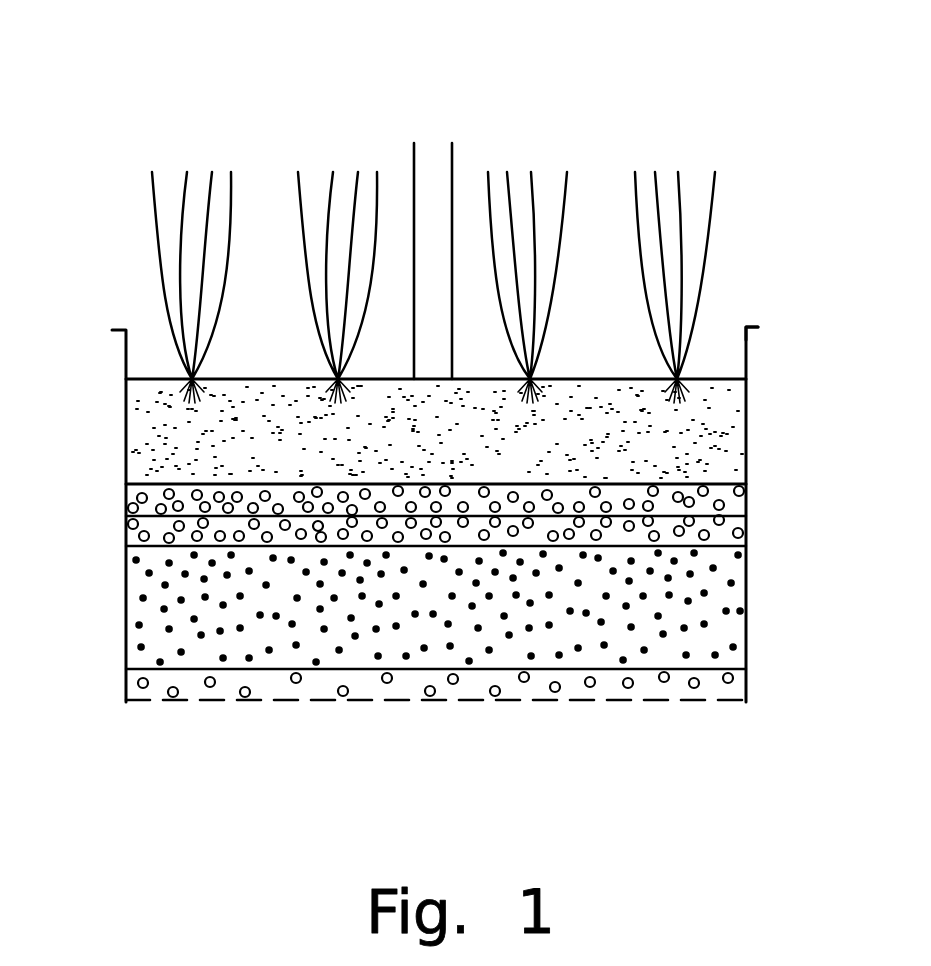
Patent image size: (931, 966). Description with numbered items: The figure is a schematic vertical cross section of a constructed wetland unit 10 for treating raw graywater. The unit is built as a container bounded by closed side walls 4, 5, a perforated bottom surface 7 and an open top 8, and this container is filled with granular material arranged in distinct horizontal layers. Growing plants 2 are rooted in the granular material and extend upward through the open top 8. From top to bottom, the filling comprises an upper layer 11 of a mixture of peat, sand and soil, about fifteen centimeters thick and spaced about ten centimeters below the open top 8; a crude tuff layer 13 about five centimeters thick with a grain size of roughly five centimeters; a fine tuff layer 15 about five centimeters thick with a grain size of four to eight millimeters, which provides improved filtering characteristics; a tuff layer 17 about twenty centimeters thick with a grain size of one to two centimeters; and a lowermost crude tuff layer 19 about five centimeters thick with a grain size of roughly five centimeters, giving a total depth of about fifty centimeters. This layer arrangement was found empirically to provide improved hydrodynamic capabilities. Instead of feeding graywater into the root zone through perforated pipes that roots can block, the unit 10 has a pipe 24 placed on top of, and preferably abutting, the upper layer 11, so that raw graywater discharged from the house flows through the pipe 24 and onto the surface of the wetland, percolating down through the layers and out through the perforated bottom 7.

The constructed wetland unit 10 is at (540, 110).
The growing plants 2 is at (333, 172).
The pipe 24 is at (452, 173).
The open top 8 is at (755, 329).
The upper layer 11 is at (142, 446).
The crude tuff layer 13 is at (740, 495).
The fine tuff layer 15 is at (130, 532).
The closed side wall 4 is at (125, 578).
The closed side wall 5 is at (747, 568).
The tuff layer 17 is at (735, 599).
The crude tuff layer 19 is at (138, 687).
The perforated bottom surface 7 is at (395, 701).